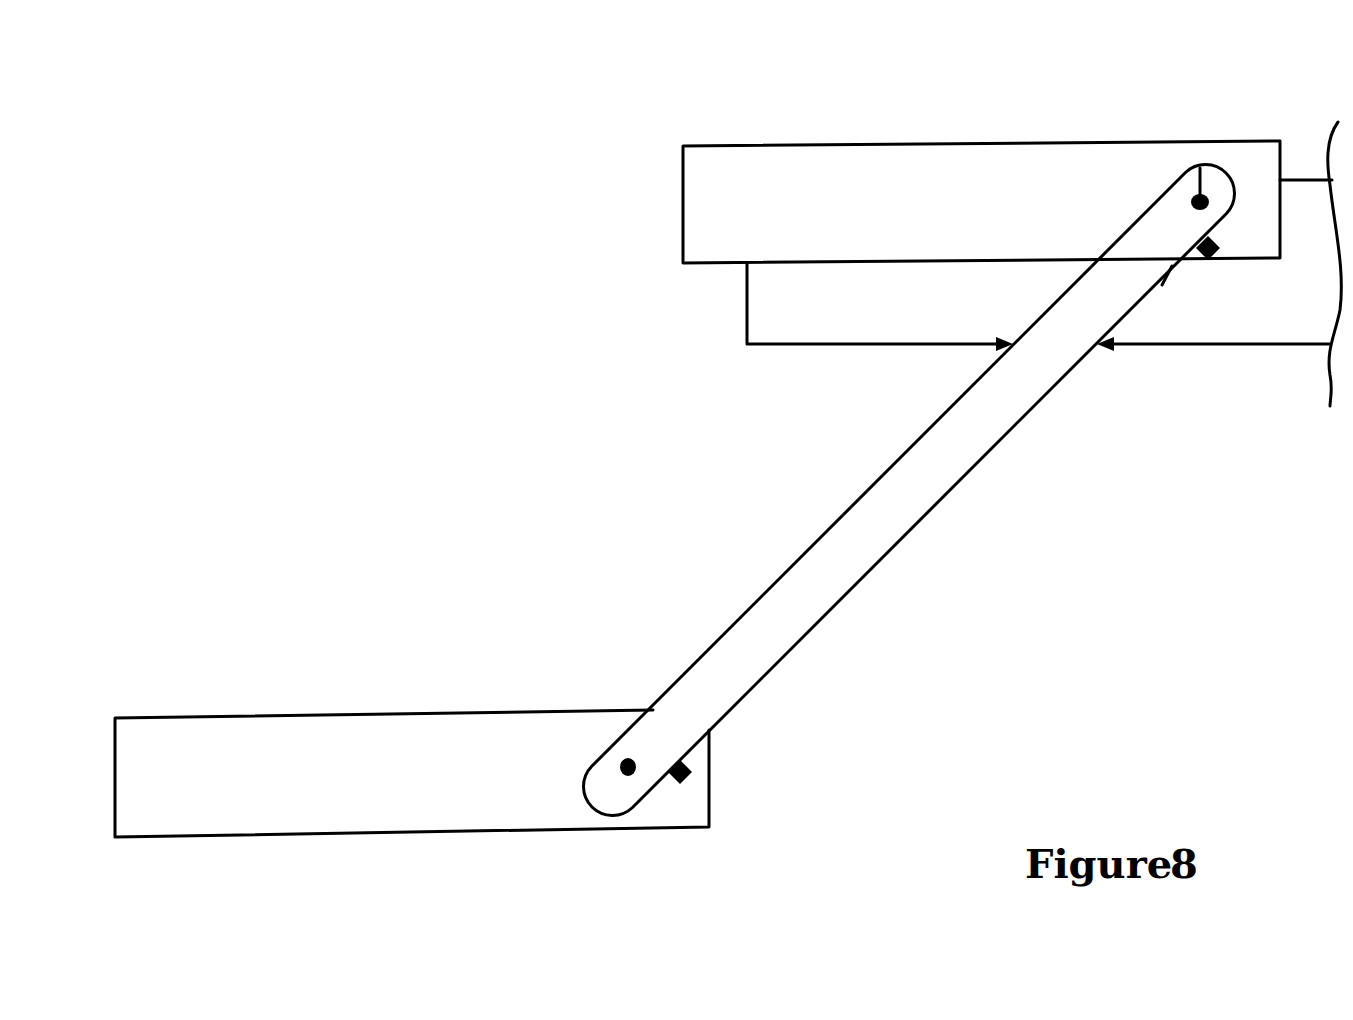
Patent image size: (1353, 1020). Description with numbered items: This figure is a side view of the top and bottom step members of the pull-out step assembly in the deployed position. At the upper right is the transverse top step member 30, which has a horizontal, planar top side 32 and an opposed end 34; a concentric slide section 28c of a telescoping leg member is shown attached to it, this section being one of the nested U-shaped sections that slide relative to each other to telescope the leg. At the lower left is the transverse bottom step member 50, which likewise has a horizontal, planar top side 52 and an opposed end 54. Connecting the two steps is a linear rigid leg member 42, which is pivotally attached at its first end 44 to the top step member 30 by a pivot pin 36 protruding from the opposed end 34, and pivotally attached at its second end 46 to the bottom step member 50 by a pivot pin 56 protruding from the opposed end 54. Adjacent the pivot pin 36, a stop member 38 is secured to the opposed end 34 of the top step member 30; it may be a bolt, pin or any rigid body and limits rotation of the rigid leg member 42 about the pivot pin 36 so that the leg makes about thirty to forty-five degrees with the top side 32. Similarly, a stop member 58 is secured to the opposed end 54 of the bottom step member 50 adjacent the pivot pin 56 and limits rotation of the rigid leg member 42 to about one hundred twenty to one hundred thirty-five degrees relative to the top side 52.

The concentric slide section 28c is at (770, 306).
The transverse top step member 30 is at (672, 171).
The horizontal, planar top side 32 is at (877, 146).
The opposed end 34 is at (966, 227).
The pivot pin 36 is at (1200, 168).
The stop member 38 is at (1213, 258).
The rigid leg member 42 is at (902, 500).
The first end 44 is at (1153, 258).
The second end 46 is at (655, 745).
The transverse bottom step member 50 is at (134, 710).
The horizontal, planar top side 52 is at (357, 713).
The opposed end 54 is at (386, 803).
The pivot pin 56 is at (626, 778).
The stop member 58 is at (690, 776).